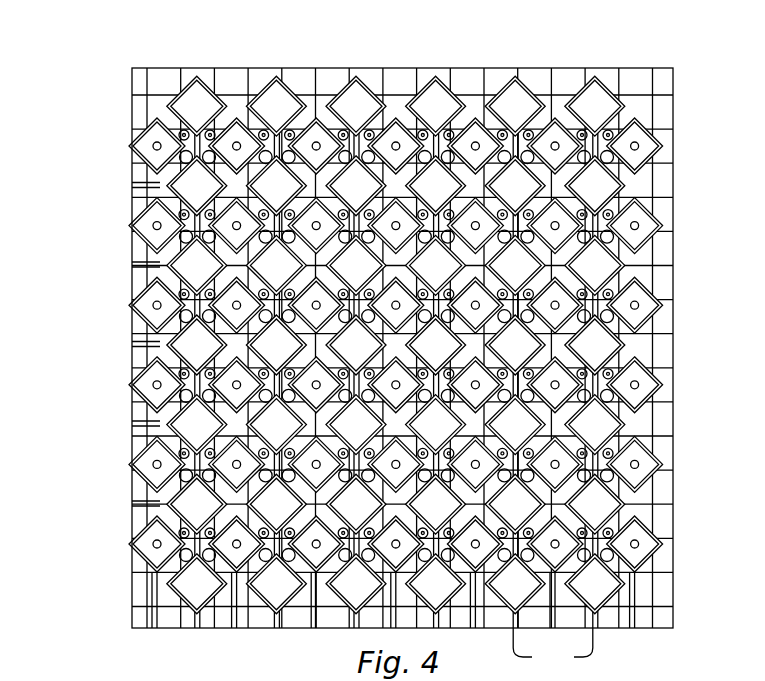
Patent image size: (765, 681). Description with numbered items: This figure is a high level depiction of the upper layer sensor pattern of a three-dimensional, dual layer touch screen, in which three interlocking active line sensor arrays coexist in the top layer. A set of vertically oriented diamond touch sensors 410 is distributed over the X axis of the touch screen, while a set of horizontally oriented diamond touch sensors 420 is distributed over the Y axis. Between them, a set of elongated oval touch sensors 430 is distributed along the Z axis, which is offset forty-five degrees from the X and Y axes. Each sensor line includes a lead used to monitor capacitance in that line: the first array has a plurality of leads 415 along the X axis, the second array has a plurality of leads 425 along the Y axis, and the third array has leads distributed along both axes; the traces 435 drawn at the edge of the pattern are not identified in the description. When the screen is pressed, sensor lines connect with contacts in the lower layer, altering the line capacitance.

The vertically oriented diamond touch sensors 410 is at (196, 93).
The leads 415 is at (553, 649).
The horizontally oriented diamond touch sensors 420 is at (157, 128).
The leads 425 is at (157, 146).
The elongated oval touch sensors 430 is at (220, 273).
The interconnect 435 is at (150, 343).